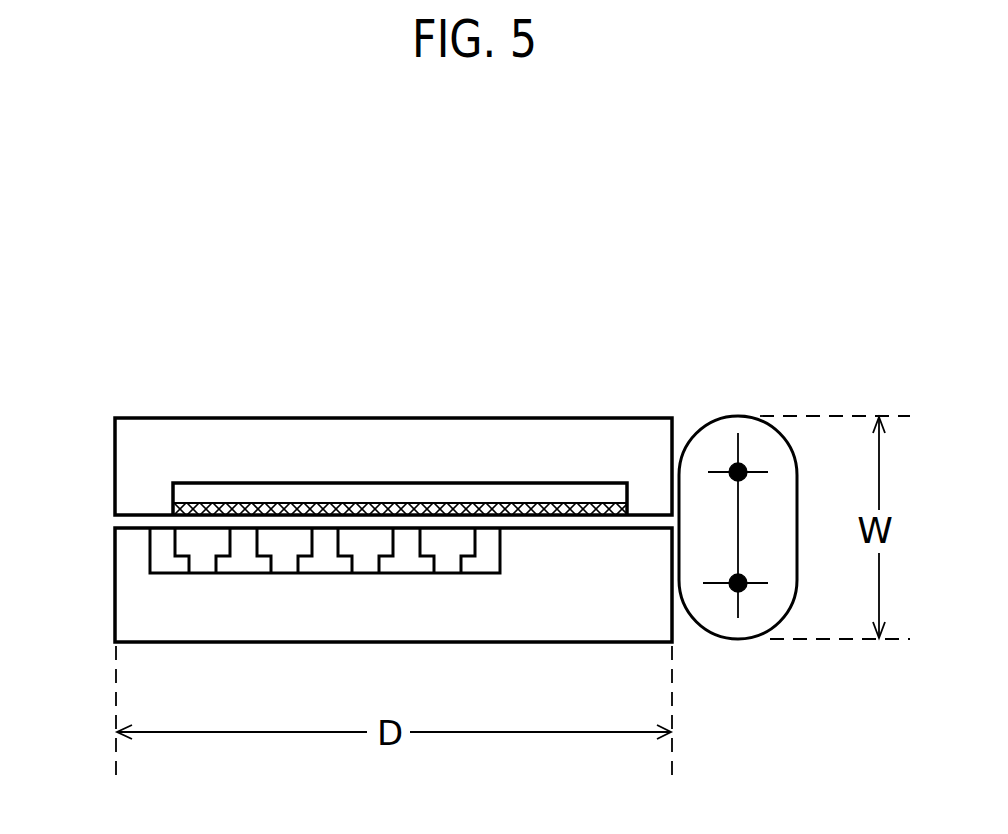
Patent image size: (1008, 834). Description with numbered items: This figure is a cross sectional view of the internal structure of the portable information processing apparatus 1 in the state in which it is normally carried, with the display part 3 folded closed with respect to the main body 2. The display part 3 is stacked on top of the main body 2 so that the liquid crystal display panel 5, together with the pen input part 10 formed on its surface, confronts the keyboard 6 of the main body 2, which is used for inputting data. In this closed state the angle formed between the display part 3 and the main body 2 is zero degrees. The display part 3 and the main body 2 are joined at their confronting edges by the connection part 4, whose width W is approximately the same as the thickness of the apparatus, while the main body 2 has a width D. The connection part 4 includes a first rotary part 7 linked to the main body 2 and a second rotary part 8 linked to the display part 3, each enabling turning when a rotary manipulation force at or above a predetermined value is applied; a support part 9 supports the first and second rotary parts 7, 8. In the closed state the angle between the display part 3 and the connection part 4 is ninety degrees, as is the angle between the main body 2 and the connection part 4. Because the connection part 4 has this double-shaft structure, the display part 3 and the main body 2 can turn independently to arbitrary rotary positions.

The portable information processing apparatus 1 is at (300, 173).
The main body 2 is at (137, 552).
The display part 3 is at (205, 441).
The connection part 4 is at (738, 538).
The liquid crystal display panel 5 is at (583, 490).
The keyboard 6 is at (180, 550).
The first rotary part 7 is at (735, 590).
The second rotary part 8 is at (733, 468).
The support part 9 is at (749, 623).
The pen input part 10 is at (392, 503).